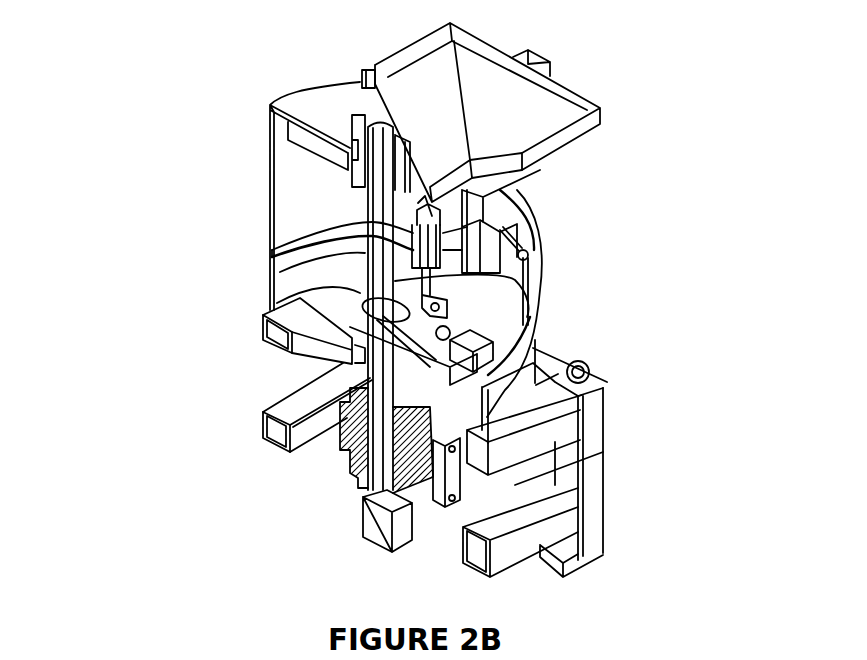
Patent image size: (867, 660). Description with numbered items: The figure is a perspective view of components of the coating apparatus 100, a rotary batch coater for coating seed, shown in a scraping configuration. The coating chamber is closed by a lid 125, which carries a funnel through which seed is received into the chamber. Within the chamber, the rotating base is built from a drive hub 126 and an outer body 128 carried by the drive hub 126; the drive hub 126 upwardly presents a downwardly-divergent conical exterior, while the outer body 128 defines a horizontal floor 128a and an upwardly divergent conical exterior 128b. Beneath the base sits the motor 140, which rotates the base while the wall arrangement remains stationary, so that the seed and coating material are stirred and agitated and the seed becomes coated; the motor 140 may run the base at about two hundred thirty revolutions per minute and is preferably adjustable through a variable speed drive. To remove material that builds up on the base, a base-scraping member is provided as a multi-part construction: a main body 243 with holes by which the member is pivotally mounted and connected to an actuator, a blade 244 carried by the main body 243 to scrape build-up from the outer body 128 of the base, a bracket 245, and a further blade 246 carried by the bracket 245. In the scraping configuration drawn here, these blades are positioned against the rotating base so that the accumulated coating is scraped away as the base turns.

The coating apparatus 100 is at (180, 155).
The lid 125 is at (265, 388).
The drive hub 126 is at (365, 337).
The outer body 128 is at (305, 290).
The horizontal floor 128a is at (403, 296).
The upwardly divergent conical exterior 128b is at (268, 263).
The motor 140 is at (413, 500).
The main body 243 is at (527, 313).
The blade 244 is at (580, 392).
The bracket 245 is at (450, 325).
The blade 246 is at (342, 430).